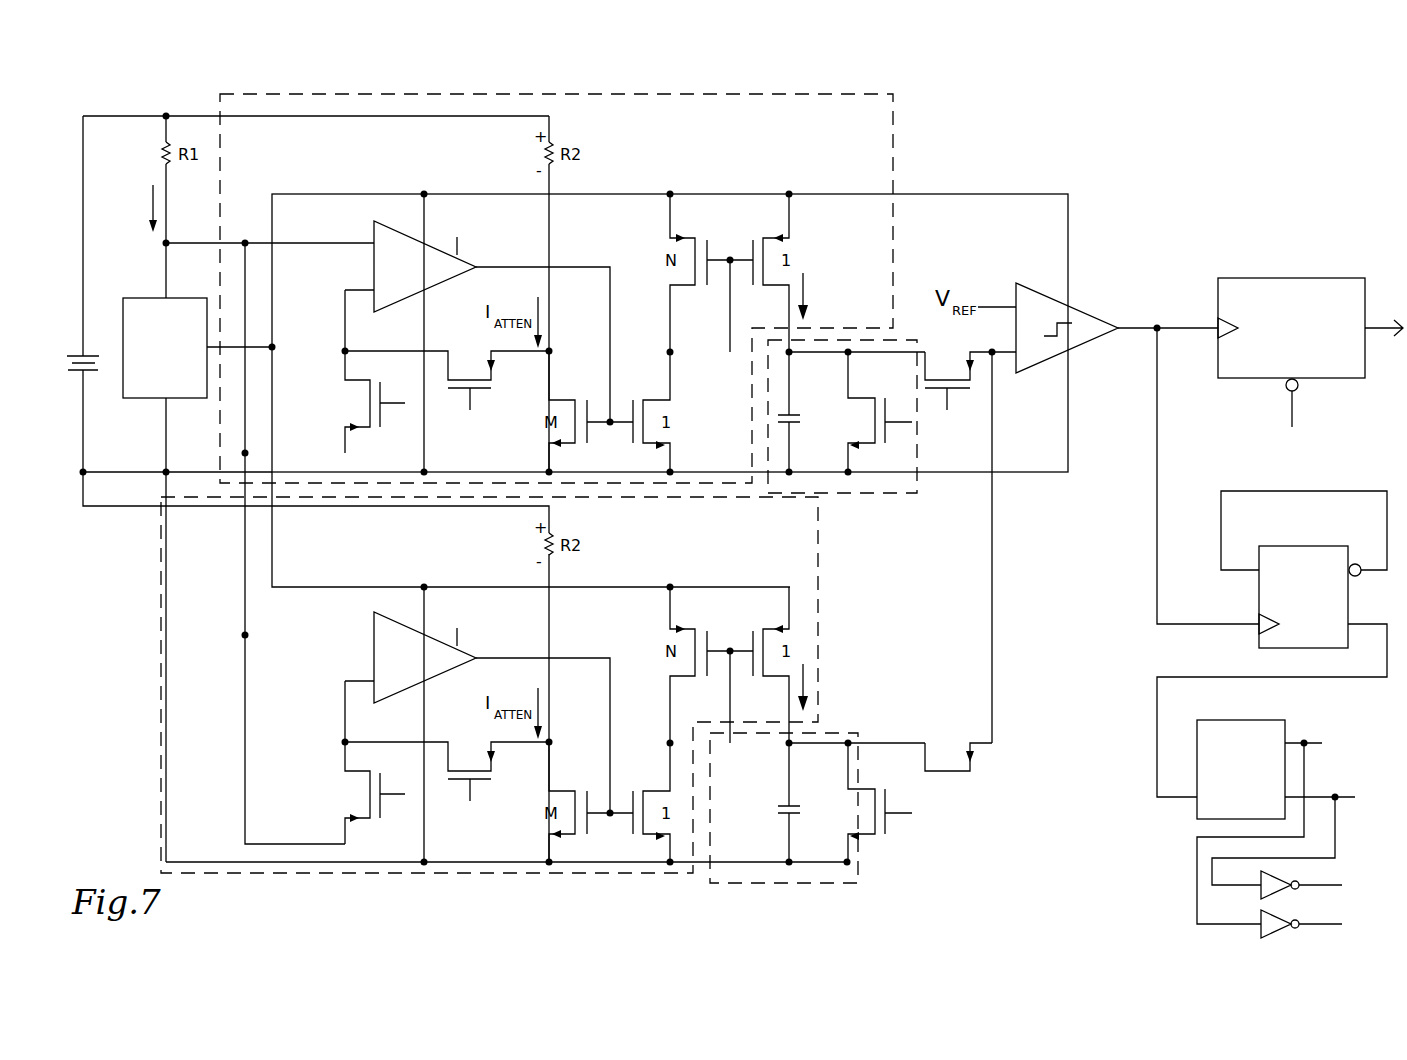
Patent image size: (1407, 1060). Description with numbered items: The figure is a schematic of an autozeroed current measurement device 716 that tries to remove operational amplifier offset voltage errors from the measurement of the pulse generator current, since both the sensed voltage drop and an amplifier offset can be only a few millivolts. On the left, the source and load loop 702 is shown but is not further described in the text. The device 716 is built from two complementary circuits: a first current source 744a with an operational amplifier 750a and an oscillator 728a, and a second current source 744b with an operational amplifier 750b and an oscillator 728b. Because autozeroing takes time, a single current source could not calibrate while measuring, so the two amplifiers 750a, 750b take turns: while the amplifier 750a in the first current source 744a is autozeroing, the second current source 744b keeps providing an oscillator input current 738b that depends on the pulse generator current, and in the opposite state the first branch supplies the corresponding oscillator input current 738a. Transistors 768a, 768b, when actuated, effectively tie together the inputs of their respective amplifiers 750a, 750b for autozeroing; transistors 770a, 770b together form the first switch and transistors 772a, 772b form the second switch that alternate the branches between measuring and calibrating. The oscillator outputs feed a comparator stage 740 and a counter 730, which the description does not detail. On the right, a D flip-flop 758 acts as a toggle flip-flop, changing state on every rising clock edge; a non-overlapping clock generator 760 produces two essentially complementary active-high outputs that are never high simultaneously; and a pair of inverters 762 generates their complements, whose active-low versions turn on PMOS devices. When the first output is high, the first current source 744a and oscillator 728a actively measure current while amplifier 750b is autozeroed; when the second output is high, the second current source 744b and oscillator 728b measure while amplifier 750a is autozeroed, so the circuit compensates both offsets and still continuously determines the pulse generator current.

The power source and load circuit 702 is at (131, 90).
The current measuring device 716 is at (544, 451).
The first current source 744a is at (877, 93).
The second current source 744b is at (820, 576).
The operational amplifier 750a is at (473, 262).
The operational amplifier 750b is at (454, 652).
The transistor 768a is at (369, 407).
The transistor 768b is at (357, 762).
The transistor 770a is at (478, 378).
The transistor 770b is at (447, 772).
The first mirrored current 738a is at (806, 288).
The oscillator input current 738b is at (844, 687).
The oscillator 728a is at (892, 493).
The oscillator 728b is at (815, 825).
The transistor 772a is at (958, 390).
The transistor 772b is at (993, 792).
The comparator 740 is at (1106, 319).
The counter 730 is at (1348, 278).
The D flip-flop 758 is at (1331, 546).
The non-overlapping clock generator 760 is at (1268, 720).
The pair of inverters 762 is at (1166, 901).